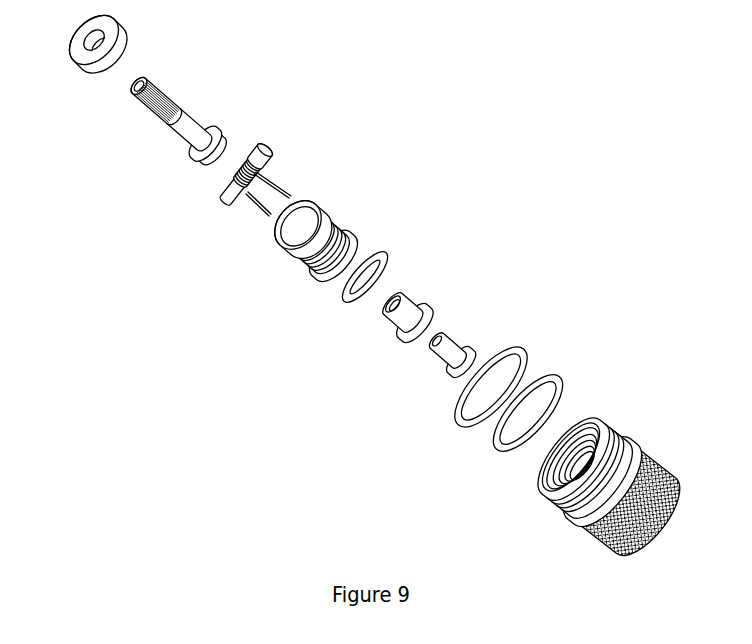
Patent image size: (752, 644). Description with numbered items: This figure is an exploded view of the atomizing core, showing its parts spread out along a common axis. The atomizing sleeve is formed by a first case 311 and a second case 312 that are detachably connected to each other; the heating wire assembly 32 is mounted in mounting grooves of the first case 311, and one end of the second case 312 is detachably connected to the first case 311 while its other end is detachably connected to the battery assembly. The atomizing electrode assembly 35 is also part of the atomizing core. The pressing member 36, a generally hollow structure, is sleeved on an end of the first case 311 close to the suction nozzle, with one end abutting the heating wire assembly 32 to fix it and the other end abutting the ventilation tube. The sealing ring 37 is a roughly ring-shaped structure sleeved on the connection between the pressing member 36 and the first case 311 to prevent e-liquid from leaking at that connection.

The sealing ring 37 is at (97, 72).
The pressing member 36 is at (195, 133).
The heating wire assembly 32 is at (270, 138).
The first case 311 is at (292, 257).
The atomizing electrode assembly 35 is at (437, 308).
The second case 312 is at (617, 430).